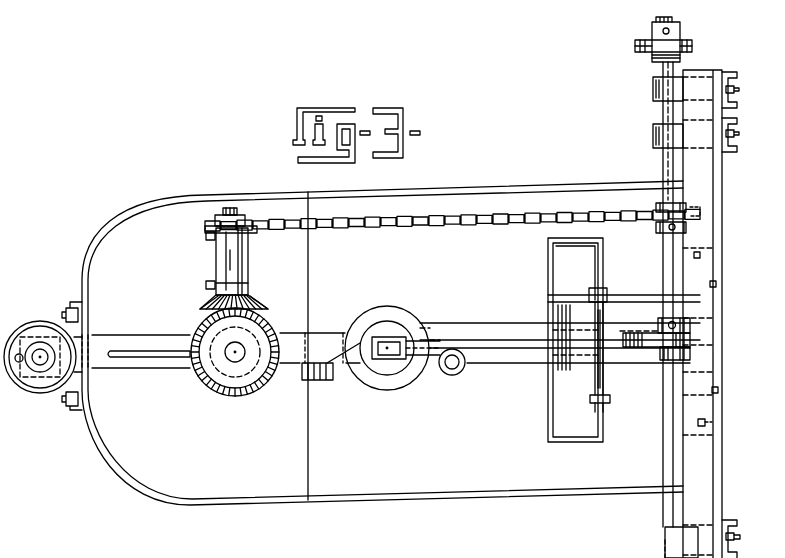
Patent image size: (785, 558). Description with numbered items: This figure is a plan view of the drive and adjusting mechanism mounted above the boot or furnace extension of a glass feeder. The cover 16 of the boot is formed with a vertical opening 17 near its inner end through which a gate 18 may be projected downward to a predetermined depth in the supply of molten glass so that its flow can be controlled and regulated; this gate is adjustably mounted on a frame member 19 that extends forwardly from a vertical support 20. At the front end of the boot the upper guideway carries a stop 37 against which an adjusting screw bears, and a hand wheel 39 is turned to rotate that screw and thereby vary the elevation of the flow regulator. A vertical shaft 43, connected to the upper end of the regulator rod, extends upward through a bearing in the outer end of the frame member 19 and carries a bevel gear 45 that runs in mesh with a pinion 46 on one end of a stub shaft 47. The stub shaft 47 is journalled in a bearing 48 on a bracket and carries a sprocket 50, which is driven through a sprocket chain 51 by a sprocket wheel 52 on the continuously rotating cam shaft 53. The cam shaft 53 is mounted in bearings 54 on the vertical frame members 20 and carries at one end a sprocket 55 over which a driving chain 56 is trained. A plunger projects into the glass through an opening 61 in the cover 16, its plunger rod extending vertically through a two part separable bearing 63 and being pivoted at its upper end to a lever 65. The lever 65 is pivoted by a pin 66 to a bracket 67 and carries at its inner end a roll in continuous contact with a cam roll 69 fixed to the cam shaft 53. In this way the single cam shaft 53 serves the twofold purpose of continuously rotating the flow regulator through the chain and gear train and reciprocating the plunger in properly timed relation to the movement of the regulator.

The cover 16 is at (382, 343).
The vertical opening 17 is at (603, 280).
The gate 18 is at (588, 258).
The frame member 19 is at (490, 323).
The vertical support 20 is at (737, 118).
The stop 37 is at (66, 398).
The hand wheel 39 is at (44, 330).
The shaft 43 is at (232, 356).
The bevel gear 45 is at (264, 380).
The pinion 46 is at (255, 305).
The stub shaft 47 is at (238, 210).
The bearing 48 is at (248, 262).
The sprocket 50 is at (214, 220).
The sprocket chain 51 is at (370, 228).
The sprocket wheel 52 is at (656, 206).
The cam shaft 53 is at (660, 72).
The bearings 54 is at (653, 130).
The sprocket 55 is at (681, 27).
The driving chain 56 is at (692, 46).
The opening 61 is at (396, 386).
The two part separable bearing 63 is at (400, 336).
The lever 65 is at (496, 352).
The pin 66 is at (607, 292).
The bracket 67 is at (638, 384).
The cam roll 69 is at (633, 333).